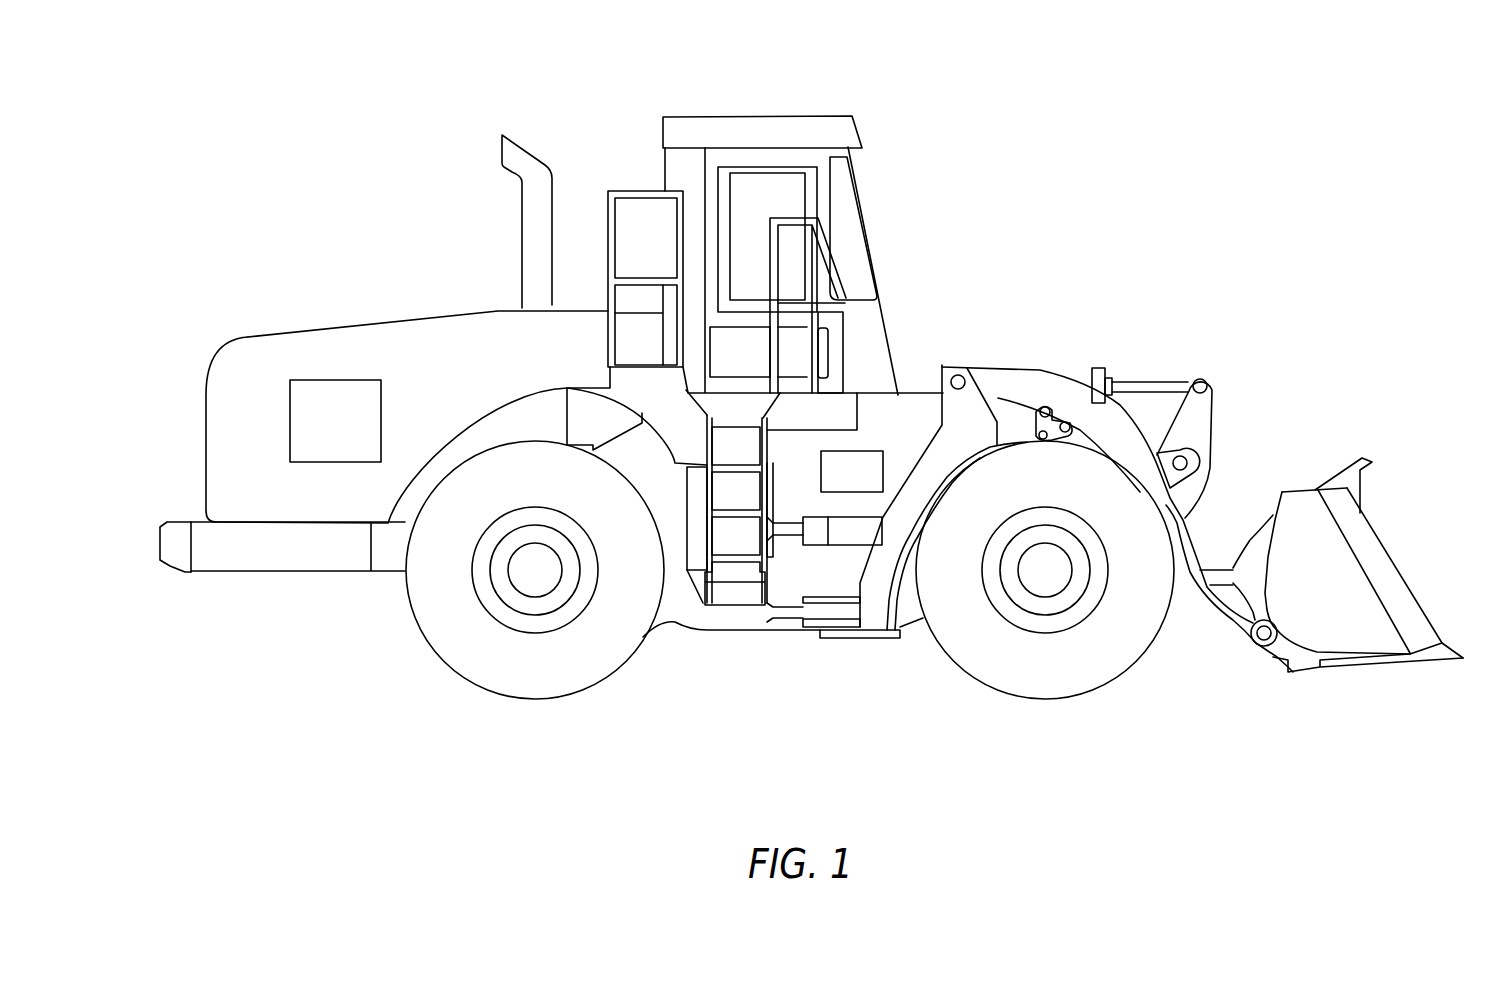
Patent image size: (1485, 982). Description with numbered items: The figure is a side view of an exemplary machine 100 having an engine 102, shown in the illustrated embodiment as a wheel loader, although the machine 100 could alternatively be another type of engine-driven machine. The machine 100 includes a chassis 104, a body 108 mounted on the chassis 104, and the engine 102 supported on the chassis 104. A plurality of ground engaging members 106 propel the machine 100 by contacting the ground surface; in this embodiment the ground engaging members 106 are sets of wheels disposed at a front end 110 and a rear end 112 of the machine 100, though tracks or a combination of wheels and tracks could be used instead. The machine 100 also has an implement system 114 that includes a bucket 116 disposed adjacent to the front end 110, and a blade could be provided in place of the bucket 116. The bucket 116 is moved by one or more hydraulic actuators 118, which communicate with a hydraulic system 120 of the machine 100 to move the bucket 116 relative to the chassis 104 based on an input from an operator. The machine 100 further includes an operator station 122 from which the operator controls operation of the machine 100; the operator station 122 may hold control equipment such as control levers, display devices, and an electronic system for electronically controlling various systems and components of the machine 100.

The machine 100 is at (1279, 126).
The engine 102 is at (333, 380).
The chassis 104 is at (316, 573).
The ground engaging members 106 is at (533, 698).
The body 108 is at (440, 313).
The front end 110 is at (1229, 258).
The rear end 112 is at (189, 326).
The implement system 114 is at (1296, 411).
The bucket 116 is at (1377, 667).
The hydraulic actuators 118 is at (1147, 343).
The hydraulic system 120 is at (858, 452).
The operator station 122 is at (758, 115).